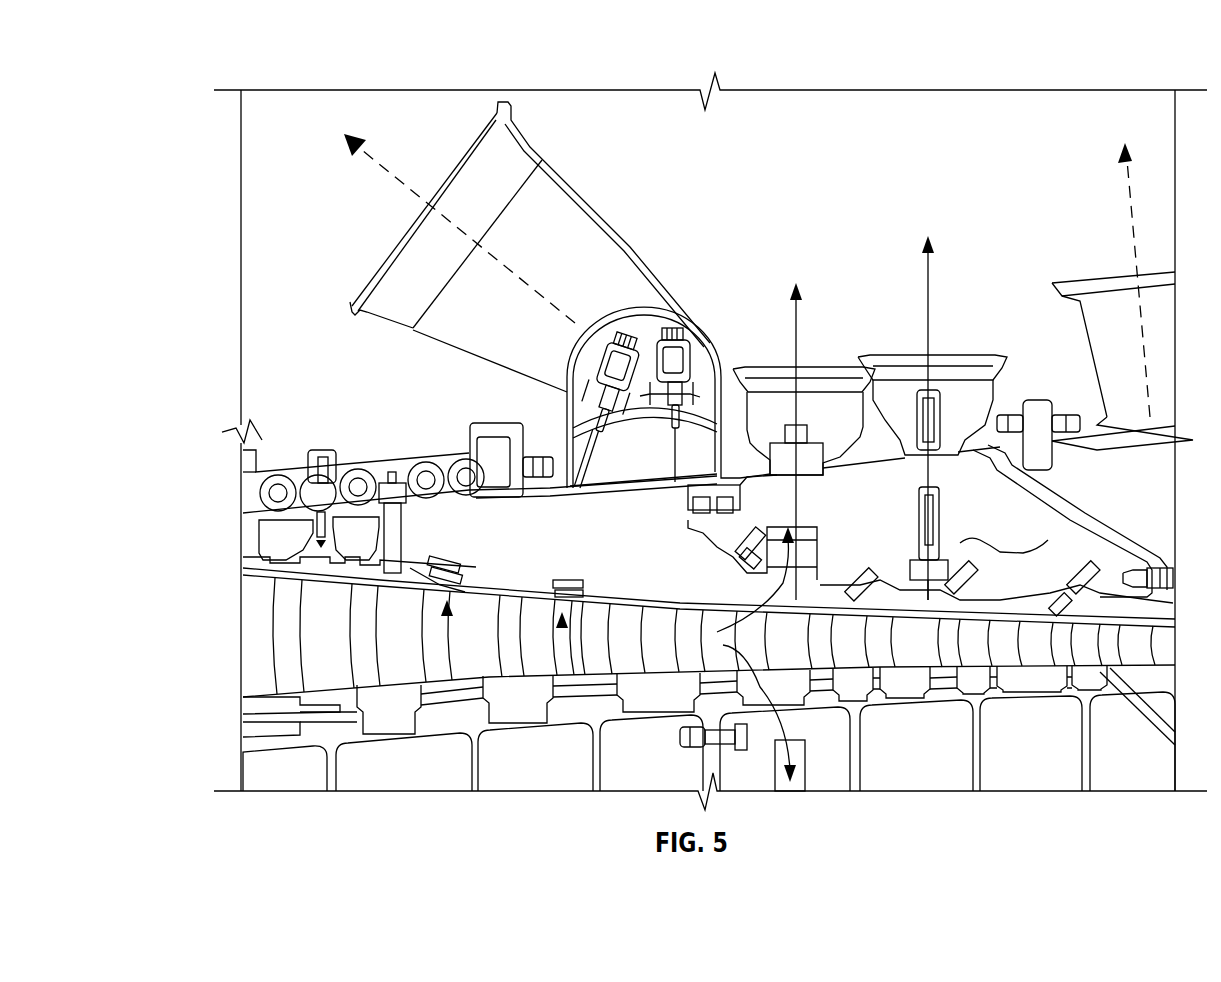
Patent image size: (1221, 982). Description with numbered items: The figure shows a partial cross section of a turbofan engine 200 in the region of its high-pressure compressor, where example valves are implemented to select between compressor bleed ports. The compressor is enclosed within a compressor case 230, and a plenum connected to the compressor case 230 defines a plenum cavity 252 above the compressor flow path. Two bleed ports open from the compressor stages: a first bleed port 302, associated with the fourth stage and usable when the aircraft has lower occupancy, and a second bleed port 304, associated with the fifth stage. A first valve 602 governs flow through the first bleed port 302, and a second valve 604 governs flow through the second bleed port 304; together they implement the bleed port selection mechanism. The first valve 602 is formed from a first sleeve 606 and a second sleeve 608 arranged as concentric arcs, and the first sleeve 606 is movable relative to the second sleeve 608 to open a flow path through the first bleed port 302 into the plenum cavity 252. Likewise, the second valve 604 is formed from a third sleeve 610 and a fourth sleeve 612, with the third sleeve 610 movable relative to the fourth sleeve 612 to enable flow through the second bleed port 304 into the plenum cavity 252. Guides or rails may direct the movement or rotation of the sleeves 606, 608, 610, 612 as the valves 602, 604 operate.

The turbofan engine 200 is at (254, 54).
The compressor case 230 is at (447, 783).
The plenum cavity 252 is at (523, 515).
The first bleed port 302 is at (433, 623).
The second bleed port 304 is at (570, 627).
The first valve 602 is at (447, 615).
The second valve 604 is at (562, 627).
The first sleeve 606 is at (460, 587).
The second sleeve 608 is at (433, 560).
The third sleeve 610 is at (553, 593).
The fourth sleeve 612 is at (570, 580).